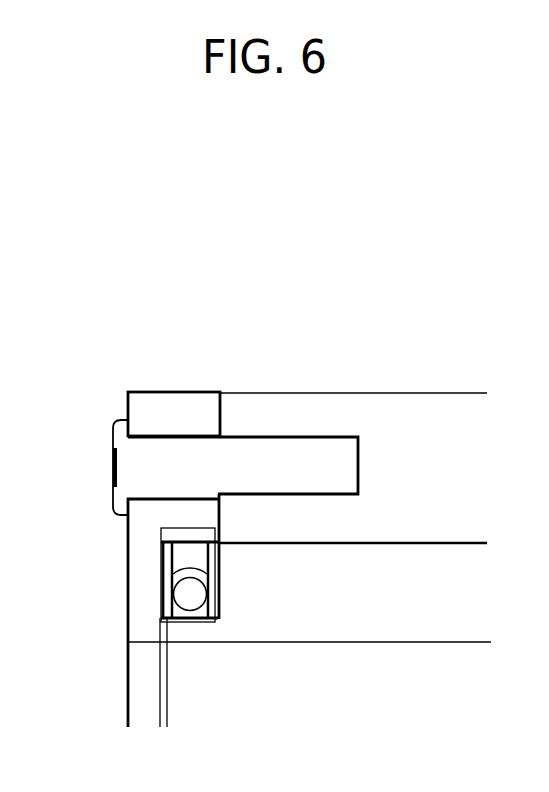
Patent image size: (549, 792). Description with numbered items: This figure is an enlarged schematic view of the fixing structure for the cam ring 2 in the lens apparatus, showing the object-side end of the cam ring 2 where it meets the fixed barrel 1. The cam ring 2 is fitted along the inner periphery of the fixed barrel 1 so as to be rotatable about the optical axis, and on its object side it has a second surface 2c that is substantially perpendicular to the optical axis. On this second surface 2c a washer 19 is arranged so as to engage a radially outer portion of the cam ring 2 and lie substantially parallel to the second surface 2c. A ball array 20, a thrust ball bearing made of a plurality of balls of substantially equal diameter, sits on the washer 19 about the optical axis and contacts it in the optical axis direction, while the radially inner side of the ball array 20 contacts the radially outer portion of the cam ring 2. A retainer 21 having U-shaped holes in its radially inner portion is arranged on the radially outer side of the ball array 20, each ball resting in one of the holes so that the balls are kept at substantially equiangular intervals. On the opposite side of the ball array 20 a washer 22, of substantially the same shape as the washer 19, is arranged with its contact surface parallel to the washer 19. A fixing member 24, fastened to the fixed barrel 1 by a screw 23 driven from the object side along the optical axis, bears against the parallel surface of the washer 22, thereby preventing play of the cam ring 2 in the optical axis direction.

The fixed barrel 1 is at (430, 447).
The cam ring 2 is at (418, 623).
The second surface 2c is at (222, 572).
The washer 19 is at (220, 615).
The ball array 20 is at (191, 600).
The retainer 21 is at (183, 557).
The washer 22 is at (162, 608).
The screw 23 is at (138, 448).
The fixing member 24 is at (177, 407).